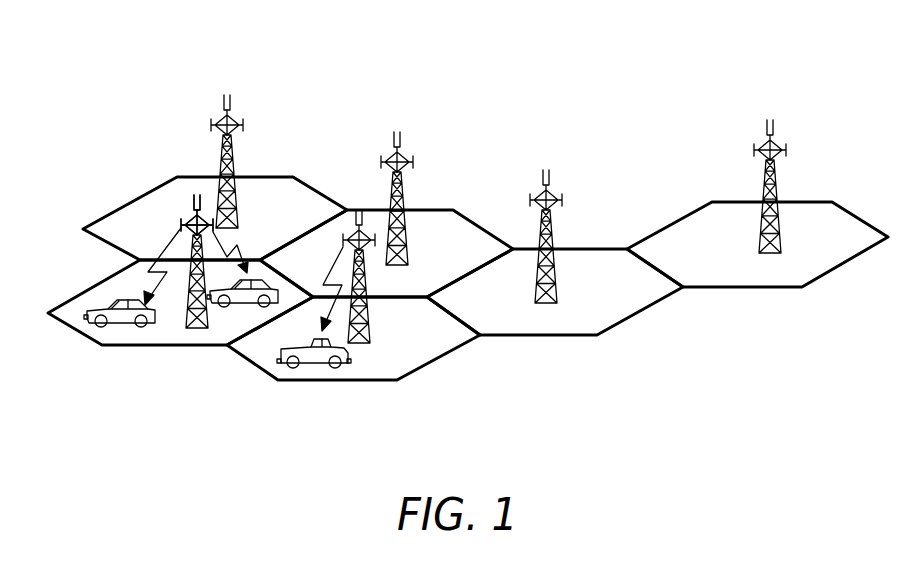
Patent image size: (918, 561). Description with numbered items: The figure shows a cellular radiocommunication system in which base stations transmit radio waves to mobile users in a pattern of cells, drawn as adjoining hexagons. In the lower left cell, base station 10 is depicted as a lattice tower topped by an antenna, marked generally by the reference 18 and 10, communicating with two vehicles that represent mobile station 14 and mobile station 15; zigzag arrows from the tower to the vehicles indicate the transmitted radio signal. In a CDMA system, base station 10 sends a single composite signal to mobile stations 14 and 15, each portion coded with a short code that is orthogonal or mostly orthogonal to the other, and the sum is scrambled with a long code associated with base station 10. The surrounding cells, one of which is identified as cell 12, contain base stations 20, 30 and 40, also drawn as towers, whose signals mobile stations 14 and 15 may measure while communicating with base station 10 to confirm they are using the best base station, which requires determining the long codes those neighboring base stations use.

The base station 10 is at (193, 218).
The cell 12 is at (117, 249).
The mobile station 14 is at (115, 323).
The mobile station 15 is at (243, 303).
The base station tower 18 is at (183, 345).
The base station 20 is at (230, 112).
The base station 30 is at (403, 142).
The base station 40 is at (340, 203).